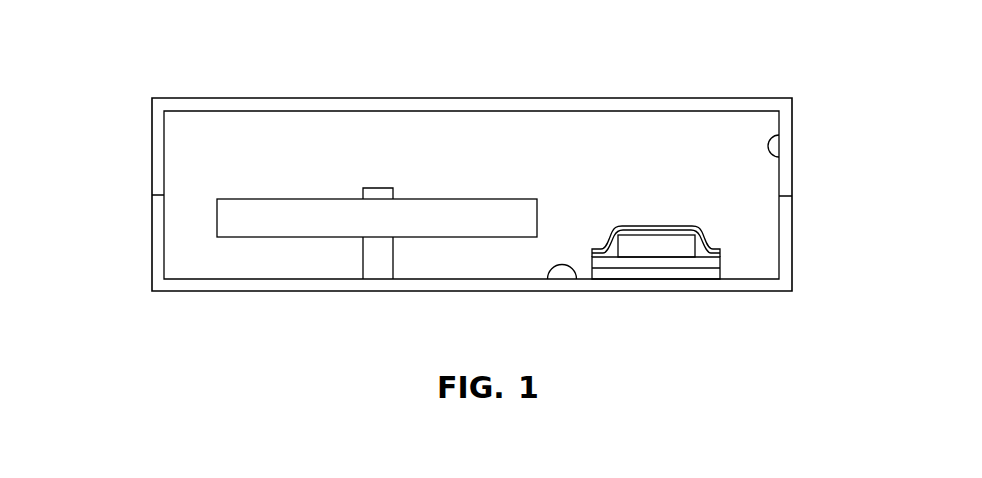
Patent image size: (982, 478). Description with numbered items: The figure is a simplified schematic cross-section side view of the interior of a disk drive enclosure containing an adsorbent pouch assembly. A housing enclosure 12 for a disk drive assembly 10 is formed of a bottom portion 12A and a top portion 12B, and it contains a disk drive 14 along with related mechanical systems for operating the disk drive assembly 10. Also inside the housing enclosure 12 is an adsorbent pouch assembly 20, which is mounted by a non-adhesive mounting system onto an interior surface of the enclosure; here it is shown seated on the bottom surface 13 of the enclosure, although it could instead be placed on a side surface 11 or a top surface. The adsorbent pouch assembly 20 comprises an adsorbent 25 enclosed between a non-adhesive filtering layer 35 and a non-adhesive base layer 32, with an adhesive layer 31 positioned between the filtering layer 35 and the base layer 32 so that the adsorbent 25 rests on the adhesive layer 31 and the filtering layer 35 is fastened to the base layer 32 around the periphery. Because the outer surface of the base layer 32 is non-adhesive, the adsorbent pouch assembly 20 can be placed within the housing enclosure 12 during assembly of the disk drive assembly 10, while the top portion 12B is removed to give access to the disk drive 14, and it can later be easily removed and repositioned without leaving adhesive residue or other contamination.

The disk drive assembly 10 is at (640, 85).
The side surface 11 is at (770, 137).
The housing enclosure 12 is at (370, 98).
The bottom portion 12A is at (151, 215).
The top portion 12B is at (151, 145).
The bottom surface 13 is at (548, 270).
The disk drive 14 is at (537, 199).
The adsorbent pouch assembly 20 is at (651, 220).
The adsorbent 25 is at (714, 252).
The adhesive layer 31 is at (722, 263).
The base layer 32 is at (725, 278).
The filtering layer 35 is at (708, 234).